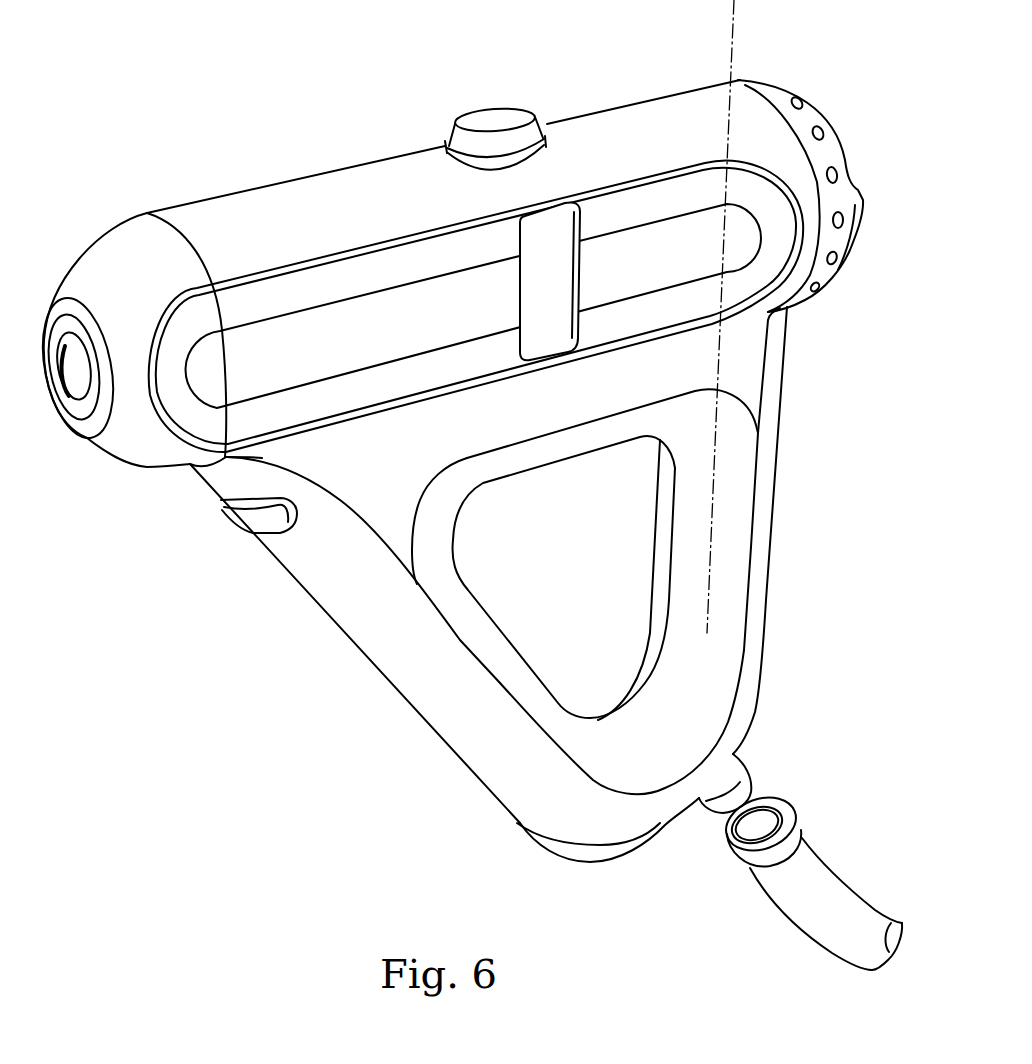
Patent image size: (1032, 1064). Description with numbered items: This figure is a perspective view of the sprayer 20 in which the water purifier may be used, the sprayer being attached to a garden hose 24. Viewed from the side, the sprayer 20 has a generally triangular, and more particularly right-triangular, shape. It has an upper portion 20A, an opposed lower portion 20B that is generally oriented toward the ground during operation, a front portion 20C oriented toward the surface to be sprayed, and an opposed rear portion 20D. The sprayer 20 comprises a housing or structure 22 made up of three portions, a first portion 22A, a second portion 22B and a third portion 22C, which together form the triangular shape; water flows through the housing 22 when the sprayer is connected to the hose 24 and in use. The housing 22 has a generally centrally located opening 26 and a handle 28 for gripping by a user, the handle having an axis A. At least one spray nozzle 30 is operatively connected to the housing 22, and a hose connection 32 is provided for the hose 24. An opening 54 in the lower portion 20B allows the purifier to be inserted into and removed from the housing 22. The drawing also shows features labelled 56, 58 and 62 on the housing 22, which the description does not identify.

The sprayer 20 is at (299, 158).
The upper portion 20A is at (588, 106).
The lower portion 20B is at (611, 871).
The front portion 20C is at (258, 592).
The rear portion 20D is at (806, 349).
The housing 22 is at (423, 187).
The first portion 22A is at (681, 151).
The second portion 22B is at (735, 503).
The third portion 22C is at (367, 620).
The garden hose 24 is at (800, 840).
The opening 26 is at (554, 628).
The handle 28 is at (703, 583).
The spray nozzle 30 is at (45, 381).
The hose connection 32 is at (740, 783).
The opening 54 is at (580, 845).
The push button 56 is at (492, 120).
The slide switch 58 is at (552, 232).
The latch / trigger 62 is at (258, 523).
The axis A is at (735, 33).